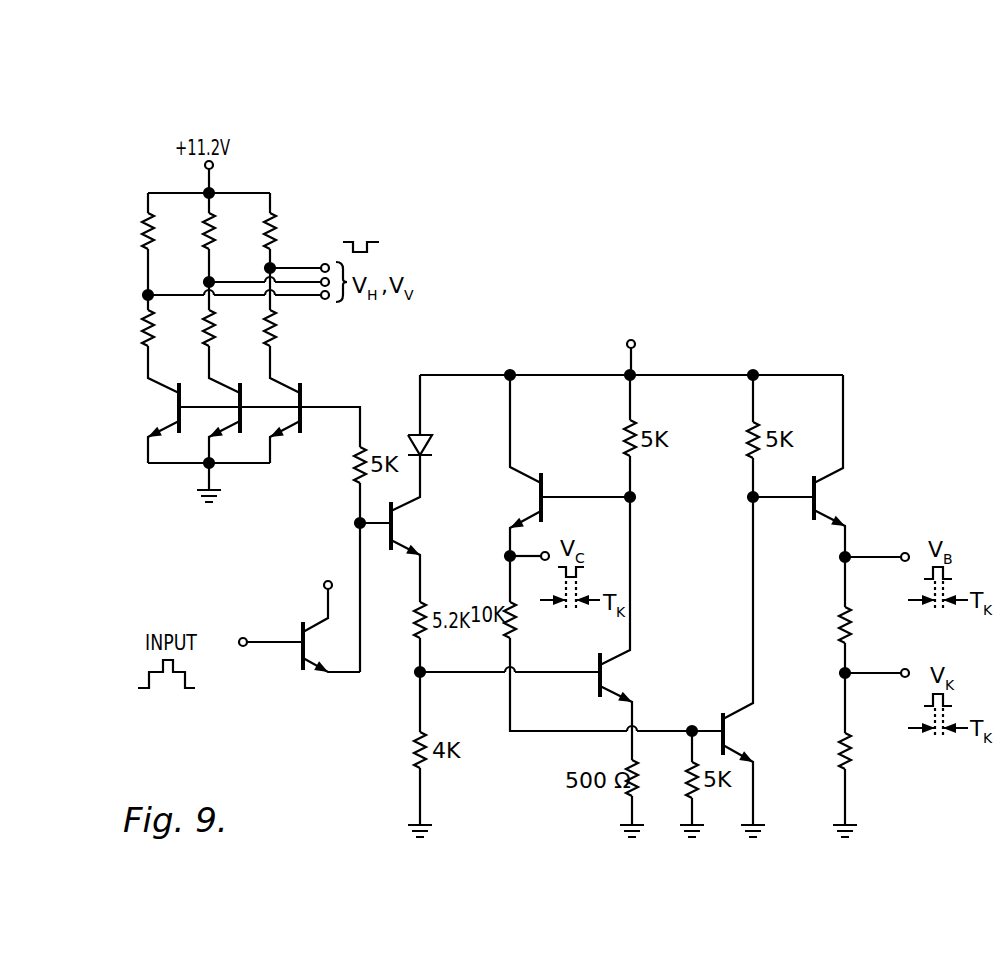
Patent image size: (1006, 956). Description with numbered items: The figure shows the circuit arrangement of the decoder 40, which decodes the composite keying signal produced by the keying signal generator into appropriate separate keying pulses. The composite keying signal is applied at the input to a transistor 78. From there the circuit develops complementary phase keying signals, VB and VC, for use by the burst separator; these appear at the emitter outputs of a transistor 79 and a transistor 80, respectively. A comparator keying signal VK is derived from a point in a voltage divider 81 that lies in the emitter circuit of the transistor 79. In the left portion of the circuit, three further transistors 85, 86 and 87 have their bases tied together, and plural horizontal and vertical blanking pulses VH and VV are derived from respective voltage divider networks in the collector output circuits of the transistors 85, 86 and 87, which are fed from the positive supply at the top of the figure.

The decoder 40 is at (815, 343).
The transistor 78 is at (349, 654).
The transistor 79 is at (864, 508).
The transistor 80 is at (529, 508).
The voltage divider 81 is at (832, 681).
The transistor 85 is at (162, 418).
The transistor 86 is at (217, 405).
The transistor 87 is at (278, 405).